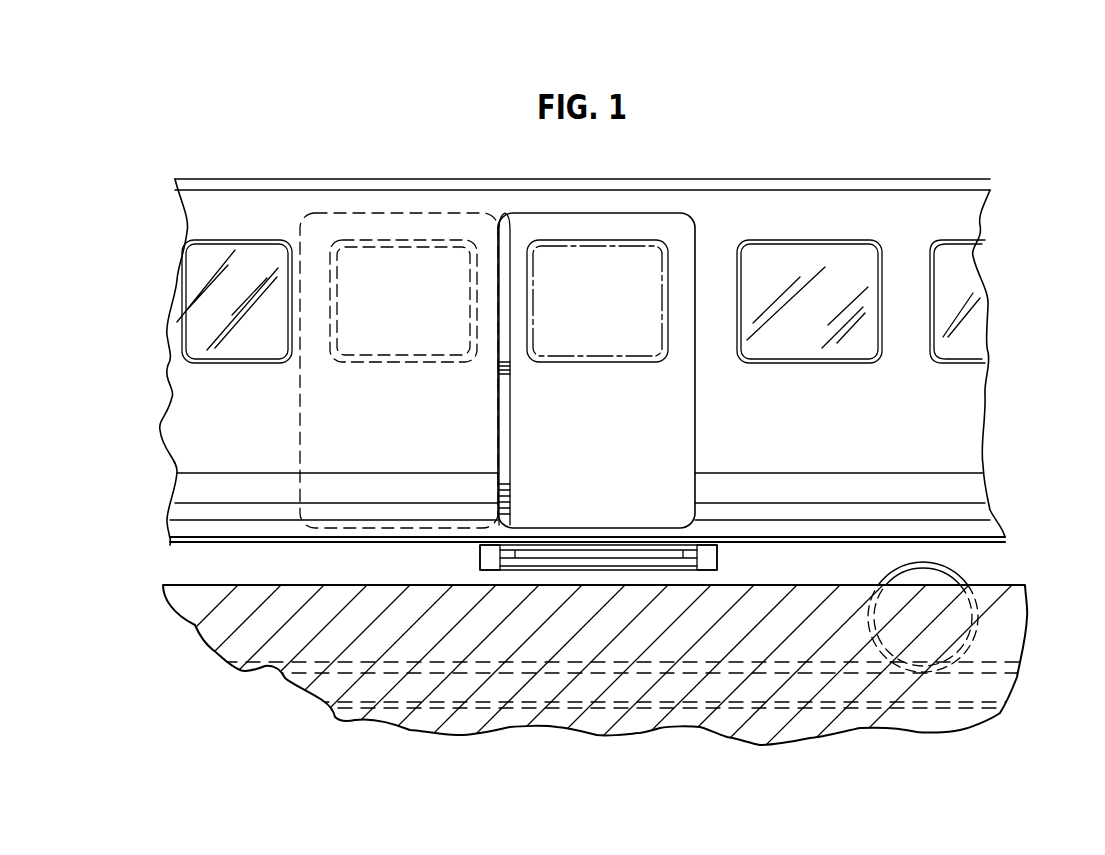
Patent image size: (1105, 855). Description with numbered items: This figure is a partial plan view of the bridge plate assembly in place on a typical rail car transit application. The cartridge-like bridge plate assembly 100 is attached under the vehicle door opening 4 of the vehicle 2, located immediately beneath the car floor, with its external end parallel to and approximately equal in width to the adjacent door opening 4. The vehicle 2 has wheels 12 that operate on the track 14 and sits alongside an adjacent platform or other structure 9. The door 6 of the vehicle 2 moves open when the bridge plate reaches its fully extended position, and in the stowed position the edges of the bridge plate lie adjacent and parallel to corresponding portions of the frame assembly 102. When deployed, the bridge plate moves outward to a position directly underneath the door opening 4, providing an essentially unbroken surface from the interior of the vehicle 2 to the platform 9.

The vehicle 2 is at (801, 417).
The door opening 4 is at (686, 213).
The door 6 is at (300, 383).
The platform 9 is at (195, 585).
The wheels 12 is at (960, 580).
The track 14 is at (973, 657).
The bridge plate assembly 100 is at (733, 557).
The frame assembly 102 is at (480, 557).